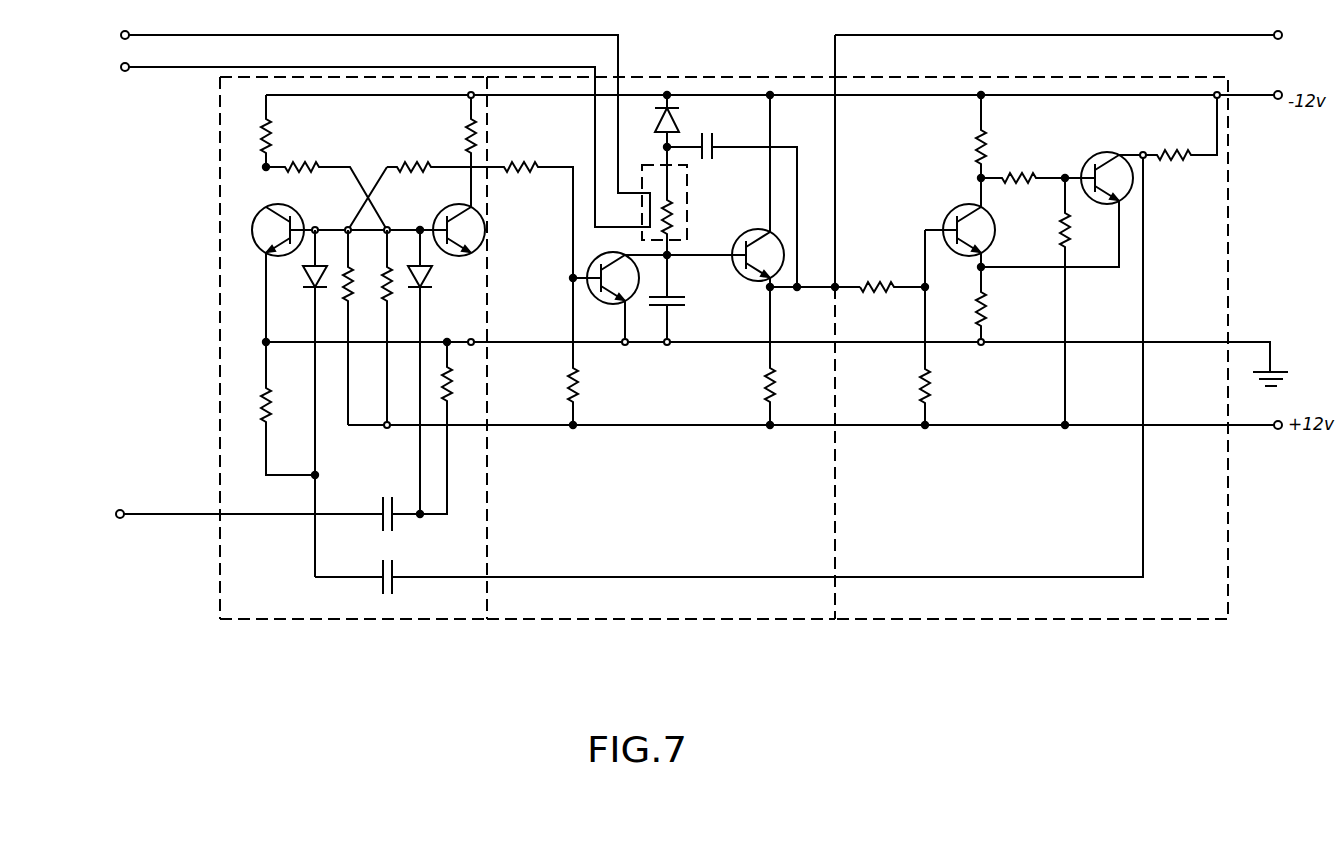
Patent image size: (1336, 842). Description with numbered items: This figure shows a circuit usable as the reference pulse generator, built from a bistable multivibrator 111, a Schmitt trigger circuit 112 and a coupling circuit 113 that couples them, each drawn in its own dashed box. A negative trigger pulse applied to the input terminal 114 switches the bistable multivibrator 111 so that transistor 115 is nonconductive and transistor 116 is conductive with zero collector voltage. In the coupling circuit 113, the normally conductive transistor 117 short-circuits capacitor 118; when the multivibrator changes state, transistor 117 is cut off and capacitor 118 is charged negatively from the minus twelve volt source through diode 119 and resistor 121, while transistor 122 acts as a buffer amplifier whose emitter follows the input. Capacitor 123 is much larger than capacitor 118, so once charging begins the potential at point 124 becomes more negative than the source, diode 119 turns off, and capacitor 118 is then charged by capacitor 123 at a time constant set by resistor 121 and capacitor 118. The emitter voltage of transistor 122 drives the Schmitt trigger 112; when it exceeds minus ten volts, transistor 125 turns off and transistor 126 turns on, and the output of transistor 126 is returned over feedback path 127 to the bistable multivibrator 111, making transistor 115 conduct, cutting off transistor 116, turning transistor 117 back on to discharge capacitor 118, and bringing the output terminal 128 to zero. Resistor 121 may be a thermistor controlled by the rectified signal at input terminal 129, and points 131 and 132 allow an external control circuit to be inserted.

The bistable multivibrator 111 is at (290, 610).
The Schmitt trigger circuit 112 is at (985, 610).
The coupling circuit 113 is at (643, 610).
The input terminal 114 is at (118, 518).
The transistor 115 is at (323, 197).
The transistor 116 is at (457, 205).
The transistor 117 is at (596, 300).
The capacitor 118 is at (685, 303).
The diode 119 is at (677, 128).
The resistor 121 is at (673, 195).
The transistor 122 is at (738, 269).
The capacitor 123 is at (705, 162).
The point 124 is at (664, 148).
The transistor 125 is at (957, 207).
The transistor 126 is at (1108, 133).
The feedback path 127 is at (709, 556).
The output terminal 128 is at (1078, 156).
The input terminal 129 is at (365, 129).
The point 131 is at (795, 293).
The point 132 is at (838, 285).